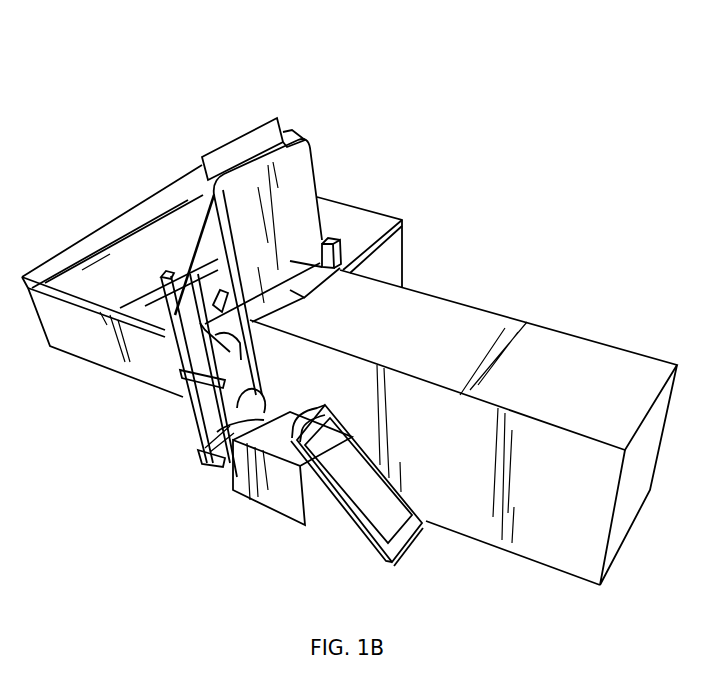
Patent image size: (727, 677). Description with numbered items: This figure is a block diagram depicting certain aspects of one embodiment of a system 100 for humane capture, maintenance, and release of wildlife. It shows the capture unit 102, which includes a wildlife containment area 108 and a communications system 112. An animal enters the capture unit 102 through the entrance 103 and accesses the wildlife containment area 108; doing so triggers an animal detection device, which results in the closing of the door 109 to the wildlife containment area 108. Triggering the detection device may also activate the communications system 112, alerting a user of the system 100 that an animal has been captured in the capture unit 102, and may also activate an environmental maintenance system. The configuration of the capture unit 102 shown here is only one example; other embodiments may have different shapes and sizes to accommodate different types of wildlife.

The system 100 is at (510, 54).
The capture unit 102 is at (504, 162).
The entrance 103 is at (462, 517).
The wildlife containment area 108 is at (371, 206).
The door 109 is at (302, 175).
The communications system 112 is at (293, 500).